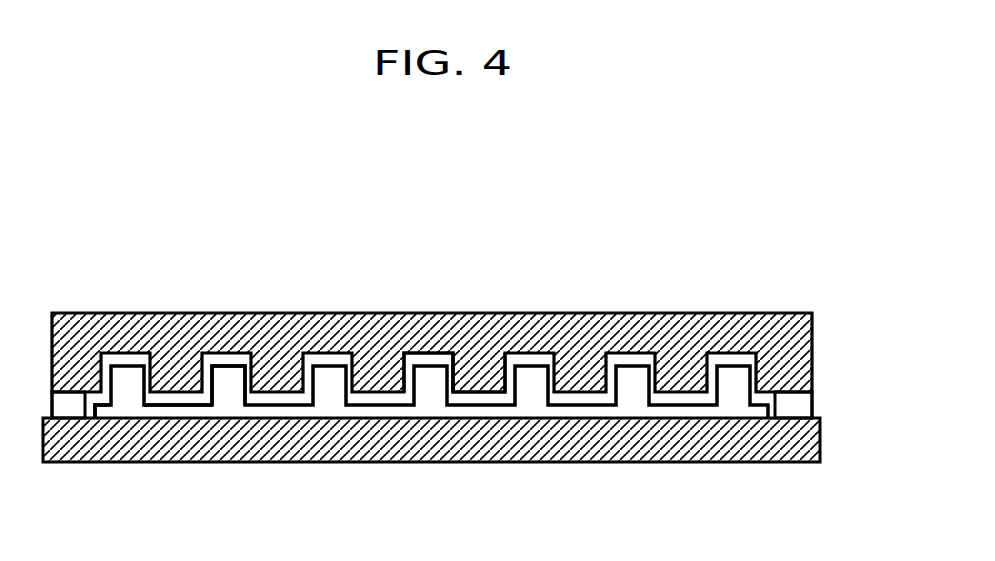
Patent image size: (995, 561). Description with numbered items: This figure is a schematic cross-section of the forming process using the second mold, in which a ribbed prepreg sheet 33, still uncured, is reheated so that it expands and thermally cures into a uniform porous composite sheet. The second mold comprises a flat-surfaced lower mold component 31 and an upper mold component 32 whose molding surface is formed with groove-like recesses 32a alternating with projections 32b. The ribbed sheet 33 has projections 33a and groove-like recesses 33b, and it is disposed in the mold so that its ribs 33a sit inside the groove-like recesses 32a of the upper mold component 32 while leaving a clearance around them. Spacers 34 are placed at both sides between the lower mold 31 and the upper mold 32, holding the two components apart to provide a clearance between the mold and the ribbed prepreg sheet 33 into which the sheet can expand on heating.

The lower mold component 31 is at (613, 447).
The upper mold component 32 is at (550, 333).
The groove-like recesses 32a is at (425, 355).
The projections 32b is at (480, 375).
The ribbed prepreg sheet 33 is at (627, 405).
The projections 33a is at (228, 382).
The groove-like recesses 33b is at (178, 407).
The spacers 34 is at (798, 407).